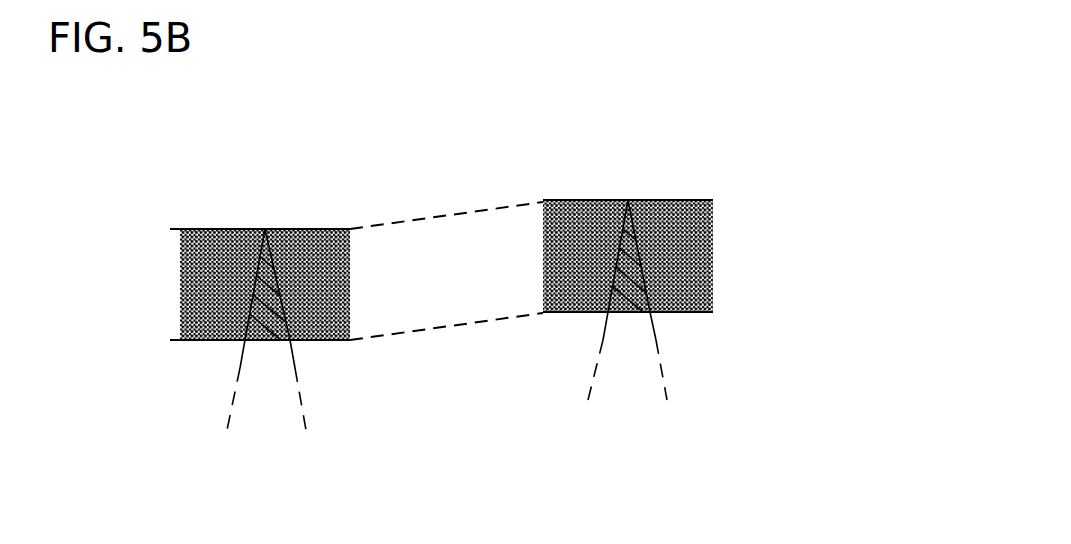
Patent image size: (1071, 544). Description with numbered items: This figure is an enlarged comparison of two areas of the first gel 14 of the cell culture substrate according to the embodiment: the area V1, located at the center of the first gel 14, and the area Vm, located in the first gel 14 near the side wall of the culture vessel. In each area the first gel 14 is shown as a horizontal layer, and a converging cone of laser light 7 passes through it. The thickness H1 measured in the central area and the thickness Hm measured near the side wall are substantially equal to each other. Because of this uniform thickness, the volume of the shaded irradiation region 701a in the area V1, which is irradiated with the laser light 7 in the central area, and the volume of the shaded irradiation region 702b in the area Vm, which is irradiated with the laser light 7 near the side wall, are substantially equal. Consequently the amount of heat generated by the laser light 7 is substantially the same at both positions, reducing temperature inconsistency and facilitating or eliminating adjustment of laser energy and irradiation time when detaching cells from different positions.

The irradiation region 701a is at (253, 262).
The irradiation region 702b is at (628, 222).
The first gel 14 is at (543, 273).
The laser light 7 is at (238, 368).
The area V1 is at (318, 160).
The area Vm is at (710, 158).
The thickness H1 is at (170, 229).
The thickness Hm is at (713, 200).